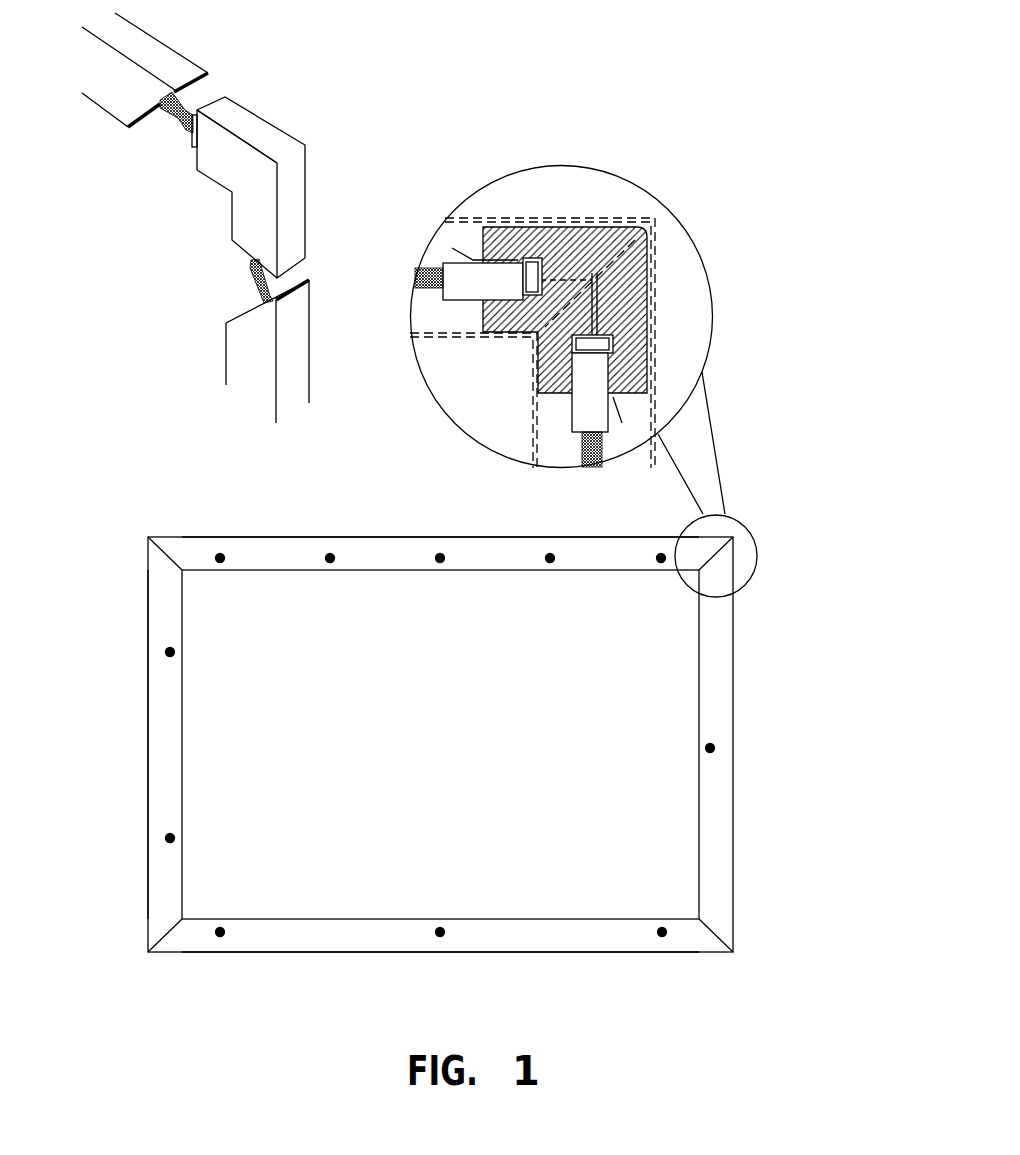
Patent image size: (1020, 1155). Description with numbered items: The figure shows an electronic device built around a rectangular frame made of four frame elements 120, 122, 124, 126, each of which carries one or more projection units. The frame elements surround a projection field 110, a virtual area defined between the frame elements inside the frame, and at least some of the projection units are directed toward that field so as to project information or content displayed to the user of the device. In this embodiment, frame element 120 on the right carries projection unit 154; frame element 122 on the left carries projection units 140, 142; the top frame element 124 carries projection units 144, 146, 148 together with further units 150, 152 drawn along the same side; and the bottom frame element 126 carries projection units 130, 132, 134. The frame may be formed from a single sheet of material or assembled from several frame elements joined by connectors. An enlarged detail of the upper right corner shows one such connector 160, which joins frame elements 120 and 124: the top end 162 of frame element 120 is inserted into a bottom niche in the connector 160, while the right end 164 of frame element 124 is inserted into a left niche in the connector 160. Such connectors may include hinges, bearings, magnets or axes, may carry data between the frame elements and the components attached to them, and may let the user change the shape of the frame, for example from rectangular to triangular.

The projection field 110 is at (607, 672).
The frame element 120 is at (733, 822).
The frame element 122 is at (148, 750).
The frame element 124 is at (393, 537).
The frame element 126 is at (538, 930).
The projection unit 130 is at (662, 937).
The projection unit 132 is at (440, 937).
The projection unit 134 is at (220, 937).
The projection unit 140 is at (166, 838).
The projection unit 142 is at (166, 652).
The projection unit 144 is at (220, 553).
The projection unit 146 is at (330, 553).
The projection unit 148 is at (440, 553).
The sensor 150 is at (550, 553).
The sensor 152 is at (661, 553).
The projection unit 154 is at (715, 747).
The connector 160 is at (630, 297).
The top end 162 is at (585, 410).
The right end 164 is at (463, 285).